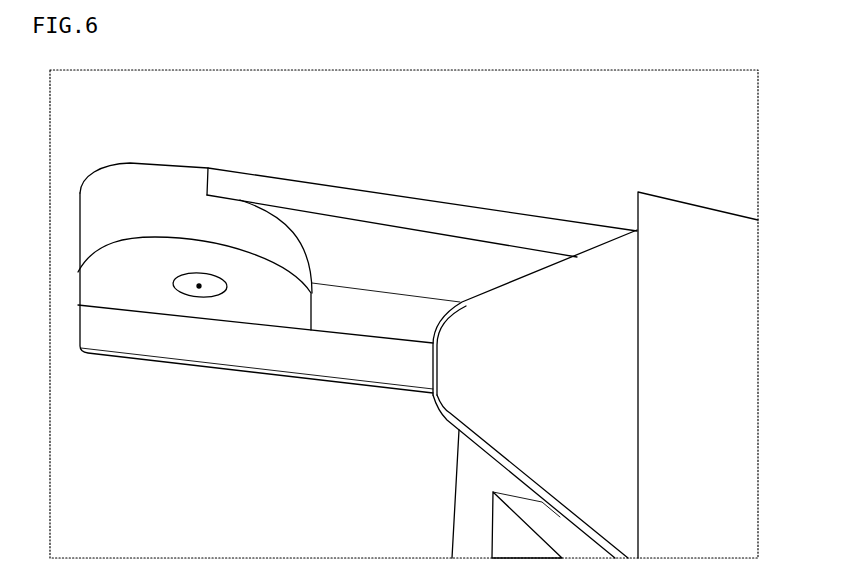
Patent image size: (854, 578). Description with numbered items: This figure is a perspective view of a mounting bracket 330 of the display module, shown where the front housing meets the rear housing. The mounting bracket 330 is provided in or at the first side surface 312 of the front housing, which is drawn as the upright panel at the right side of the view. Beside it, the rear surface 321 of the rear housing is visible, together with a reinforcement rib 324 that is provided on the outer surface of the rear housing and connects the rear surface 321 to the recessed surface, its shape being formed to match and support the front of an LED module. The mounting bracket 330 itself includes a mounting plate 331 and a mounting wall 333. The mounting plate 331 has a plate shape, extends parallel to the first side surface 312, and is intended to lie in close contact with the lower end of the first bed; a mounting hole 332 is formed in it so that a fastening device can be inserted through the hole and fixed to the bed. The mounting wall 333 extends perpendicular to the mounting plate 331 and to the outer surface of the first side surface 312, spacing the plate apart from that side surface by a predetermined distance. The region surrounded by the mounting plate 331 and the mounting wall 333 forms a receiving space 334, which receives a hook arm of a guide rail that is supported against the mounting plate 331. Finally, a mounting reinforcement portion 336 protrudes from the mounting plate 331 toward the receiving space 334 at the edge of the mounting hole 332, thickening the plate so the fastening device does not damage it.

The first side surface 312 is at (707, 250).
The rear surface 321 is at (510, 423).
The reinforcement rib 324 is at (535, 313).
The mounting bracket 330 is at (149, 162).
The mounting plate 331 is at (333, 239).
The mounting hole 332 is at (199, 289).
The mounting wall 333 is at (337, 323).
The receiving space 334 is at (410, 272).
The mounting reinforcement portion 336 is at (227, 223).